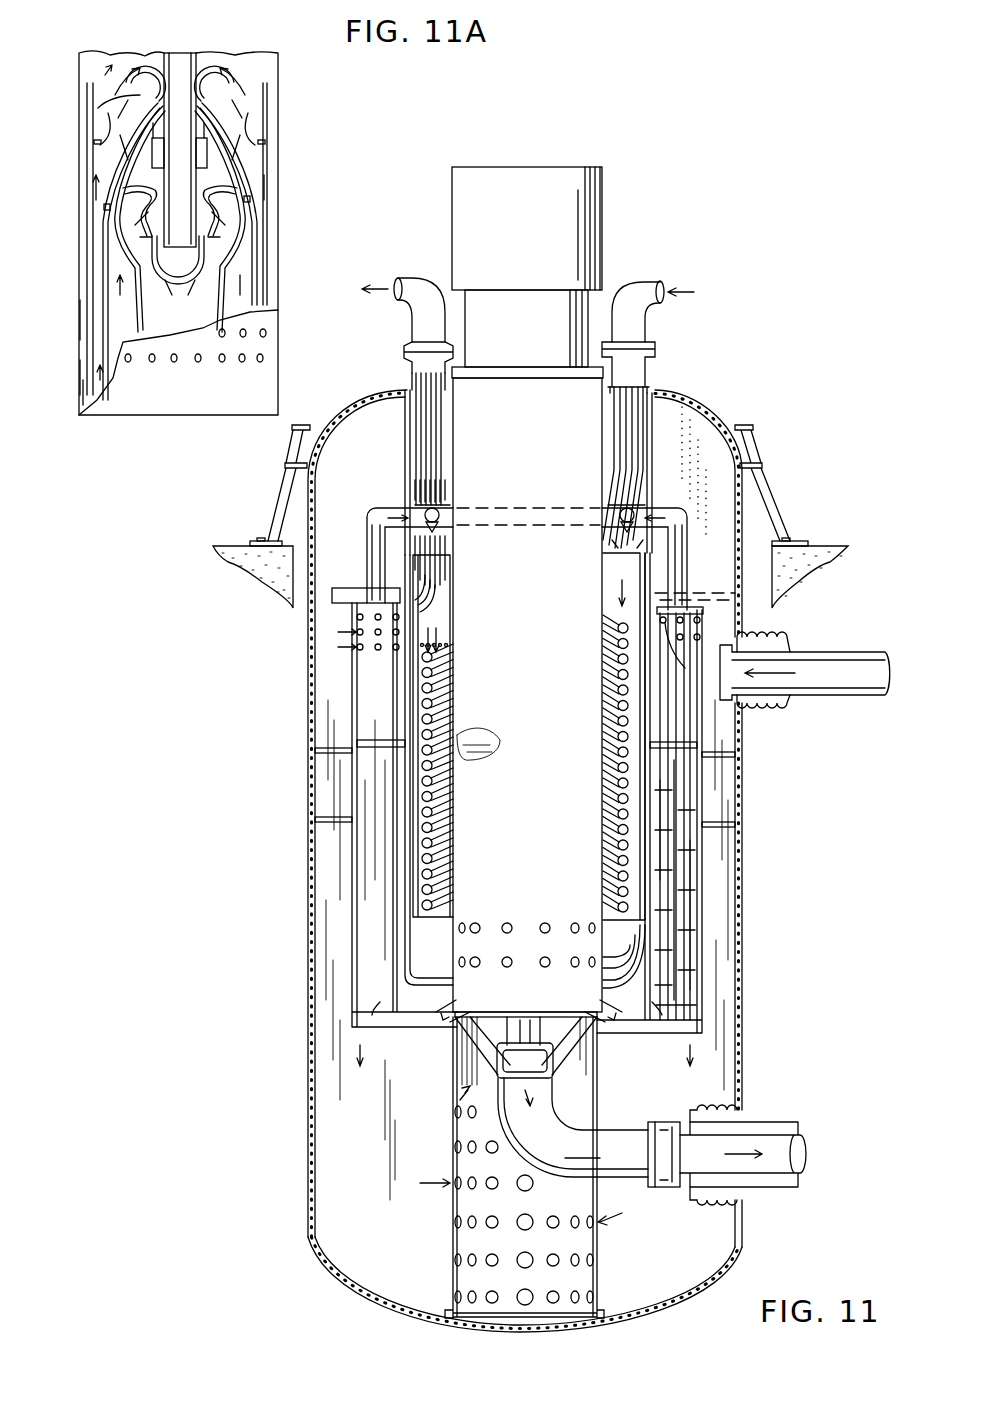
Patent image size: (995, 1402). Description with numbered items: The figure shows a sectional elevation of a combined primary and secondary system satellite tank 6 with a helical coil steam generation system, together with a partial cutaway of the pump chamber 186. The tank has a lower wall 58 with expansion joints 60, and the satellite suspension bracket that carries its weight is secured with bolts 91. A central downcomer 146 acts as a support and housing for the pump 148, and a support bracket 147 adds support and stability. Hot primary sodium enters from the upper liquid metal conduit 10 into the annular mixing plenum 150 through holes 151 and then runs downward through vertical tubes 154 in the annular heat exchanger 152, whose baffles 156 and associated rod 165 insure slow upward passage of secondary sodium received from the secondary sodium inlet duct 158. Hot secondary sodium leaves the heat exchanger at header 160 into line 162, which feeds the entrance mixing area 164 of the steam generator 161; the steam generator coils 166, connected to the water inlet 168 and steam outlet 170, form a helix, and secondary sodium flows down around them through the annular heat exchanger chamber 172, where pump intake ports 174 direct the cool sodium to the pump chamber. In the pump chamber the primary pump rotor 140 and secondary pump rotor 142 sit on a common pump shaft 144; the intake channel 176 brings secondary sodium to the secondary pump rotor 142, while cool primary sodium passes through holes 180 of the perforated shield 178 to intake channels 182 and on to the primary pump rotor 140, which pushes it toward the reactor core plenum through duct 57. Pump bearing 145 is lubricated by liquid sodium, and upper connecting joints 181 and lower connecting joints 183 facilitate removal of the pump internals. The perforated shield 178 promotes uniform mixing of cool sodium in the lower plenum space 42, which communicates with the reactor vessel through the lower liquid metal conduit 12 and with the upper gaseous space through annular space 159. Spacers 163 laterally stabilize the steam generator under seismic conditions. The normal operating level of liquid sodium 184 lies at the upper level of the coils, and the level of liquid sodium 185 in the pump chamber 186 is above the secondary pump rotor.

In FIG. 11, the satellite tank 6 is at (660, 1310).
In FIG. 11, the upper liquid metal conduit 10 is at (862, 652).
In FIG. 11, the lower liquid metal conduit 12 is at (680, 1187).
In FIG. 11, the lower plenum space 42 is at (646, 1288).
In FIG. 11, the duct 57 is at (575, 1138).
In FIG. 11, the lower wall 58 is at (742, 1080).
In FIG. 11, the expansion joints 60 is at (700, 1108).
In FIG. 11, the bolts 91 is at (262, 541).
In FIG. 11A, the primary pump rotor 140 is at (150, 240).
In FIG. 11A, the secondary pump rotor 142 is at (120, 95).
In FIG. 11A, the common pump shaft 144 is at (178, 62).
In FIG. 11A, the pump bearing 145 is at (200, 152).
In FIG. 11, the central downcomer 146 is at (457, 452).
In FIG. 11, the support bracket 147 is at (320, 748).
In FIG. 11A, the pump 148 is at (110, 160).
In FIG. 11, the pump 148 is at (452, 232).
In FIG. 11, the annular mixing plenum 150 is at (708, 616).
In FIG. 11, the holes 151 is at (725, 640).
In FIG. 11, the heat exchanger 152 is at (705, 812).
In FIG. 11, the vertical tubes 154 is at (680, 925).
In FIG. 11, the baffles 156 is at (690, 850).
In FIG. 11A, the secondary sodium inlet duct 158 is at (258, 250).
In FIG. 11, the secondary sodium inlet duct 158 is at (445, 1035).
In FIG. 11, the annular space 159 is at (400, 860).
In FIG. 11, the header 160 is at (688, 748).
In FIG. 11, the steam generator 161 is at (403, 462).
In FIG. 11, the line 162 is at (686, 545).
In FIG. 11, the spacers 163 is at (392, 755).
In FIG. 11, the entrance mixing area 164 is at (455, 492).
In FIG. 11, the rod 165 is at (677, 895).
In FIG. 11, the steam generator coils 166 is at (440, 656).
In FIG. 11, the water inlet 168 is at (652, 282).
In FIG. 11, the steam outlet 170 is at (404, 278).
In FIG. 11, the annular heat exchanger chamber 172 is at (445, 630).
In FIG. 11A, the pump intake ports 174 is at (80, 308).
In FIG. 11, the pump intake ports 174 is at (458, 932).
In FIG. 11A, the intake channel 176 is at (148, 60).
In FIG. 11, the perforated shield 178 is at (462, 1240).
In FIG. 11, the holes 180 is at (456, 1150).
In FIG. 11A, the upper connecting joints 181 is at (96, 120).
In FIG. 11A, the intake channels 182 is at (145, 182).
In FIG. 11A, the lower connecting joints 183 is at (104, 207).
In FIG. 11, the normal operating level of liquid sodium 184 is at (702, 590).
In FIG. 11, the level of liquid sodium 185 is at (458, 735).
In FIG. 11, the pump chamber 186 is at (568, 668).